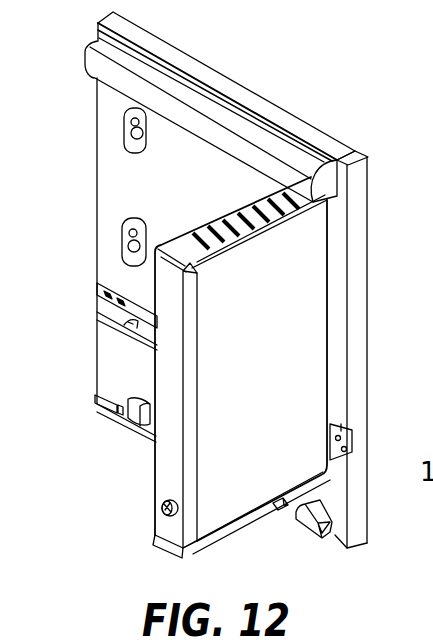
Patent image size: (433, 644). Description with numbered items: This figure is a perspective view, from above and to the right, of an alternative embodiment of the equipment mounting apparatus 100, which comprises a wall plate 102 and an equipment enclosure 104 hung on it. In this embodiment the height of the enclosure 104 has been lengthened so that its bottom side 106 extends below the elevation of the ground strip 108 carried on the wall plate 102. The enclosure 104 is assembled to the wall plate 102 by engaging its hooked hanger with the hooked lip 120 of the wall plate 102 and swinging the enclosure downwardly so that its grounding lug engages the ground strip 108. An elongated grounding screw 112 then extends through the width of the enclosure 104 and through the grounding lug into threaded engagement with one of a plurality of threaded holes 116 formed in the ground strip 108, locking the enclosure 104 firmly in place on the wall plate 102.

The equipment mounting apparatus 100 is at (325, 86).
The wall plate 102 is at (305, 135).
The equipment enclosure 104 is at (167, 462).
The bottom side 106 is at (222, 537).
The ground strip 108 is at (148, 333).
The grounding screw 112 is at (160, 502).
The threaded hole 116 is at (128, 322).
The hooked lip 120 is at (207, 139).